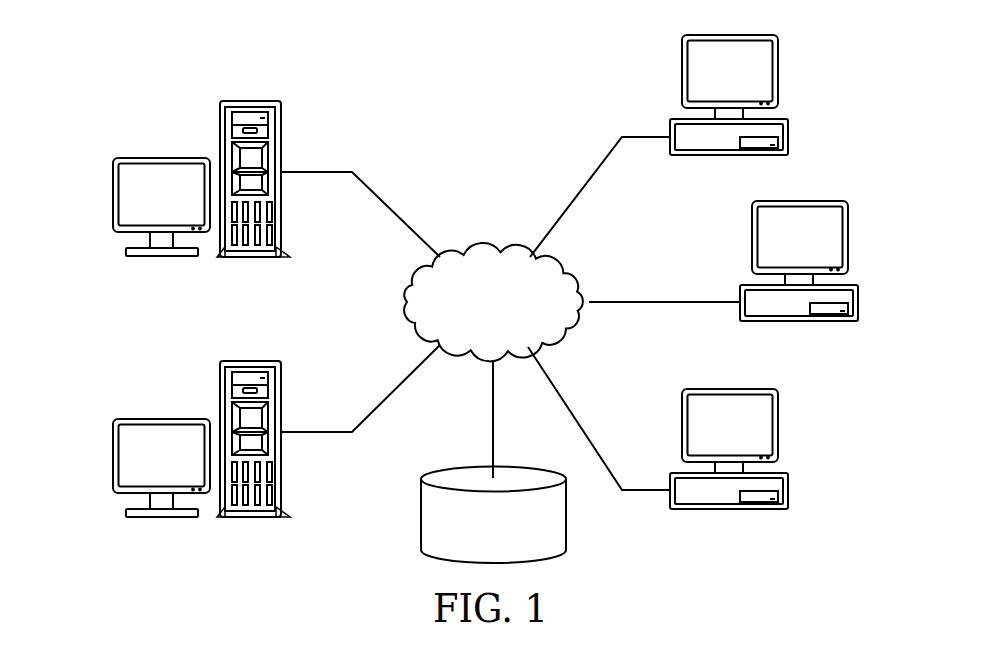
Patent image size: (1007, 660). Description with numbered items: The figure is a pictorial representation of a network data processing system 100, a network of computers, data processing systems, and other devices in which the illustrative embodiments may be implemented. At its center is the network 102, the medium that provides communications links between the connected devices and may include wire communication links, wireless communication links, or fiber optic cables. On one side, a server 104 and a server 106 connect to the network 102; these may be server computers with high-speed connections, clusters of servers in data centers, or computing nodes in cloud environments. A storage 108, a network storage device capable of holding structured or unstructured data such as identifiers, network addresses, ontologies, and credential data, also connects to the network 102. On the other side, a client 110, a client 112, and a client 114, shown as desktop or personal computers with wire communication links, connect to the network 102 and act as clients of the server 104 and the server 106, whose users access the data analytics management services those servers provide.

The network data processing system 100 is at (352, 78).
The network 102 is at (465, 248).
The server 104 is at (113, 197).
The server 106 is at (113, 455).
The storage 108 is at (421, 512).
The client 110 is at (788, 128).
The client 112 is at (860, 312).
The client 114 is at (790, 498).